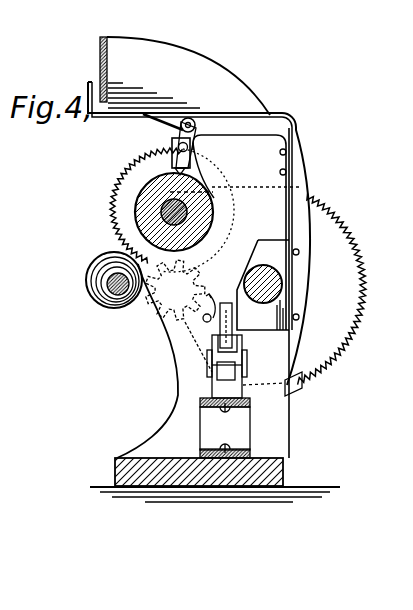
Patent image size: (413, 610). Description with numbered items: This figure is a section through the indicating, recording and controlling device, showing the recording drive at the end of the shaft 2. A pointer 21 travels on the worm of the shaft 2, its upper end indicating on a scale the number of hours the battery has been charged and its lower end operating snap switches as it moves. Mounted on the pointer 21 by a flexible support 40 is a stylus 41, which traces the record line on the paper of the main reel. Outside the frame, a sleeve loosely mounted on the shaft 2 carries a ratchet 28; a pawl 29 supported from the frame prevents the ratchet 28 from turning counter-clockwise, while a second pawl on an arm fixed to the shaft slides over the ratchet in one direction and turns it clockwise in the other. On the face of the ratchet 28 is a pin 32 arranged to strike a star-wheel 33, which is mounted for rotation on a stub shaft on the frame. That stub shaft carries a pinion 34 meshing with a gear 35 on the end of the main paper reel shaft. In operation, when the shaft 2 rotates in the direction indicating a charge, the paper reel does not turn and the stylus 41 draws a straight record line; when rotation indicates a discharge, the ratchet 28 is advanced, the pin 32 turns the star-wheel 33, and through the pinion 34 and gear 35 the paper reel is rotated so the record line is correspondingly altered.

The shaft 2 is at (282, 285).
The pointer 21 is at (284, 130).
The ratchet 28 is at (332, 289).
The pawl 29 is at (300, 390).
The pin 32 is at (204, 320).
The star-wheel 33 is at (200, 287).
The pinion 34 is at (163, 304).
The gear 35 is at (225, 227).
The flexible support 40 is at (233, 136).
The stylus 41 is at (173, 148).